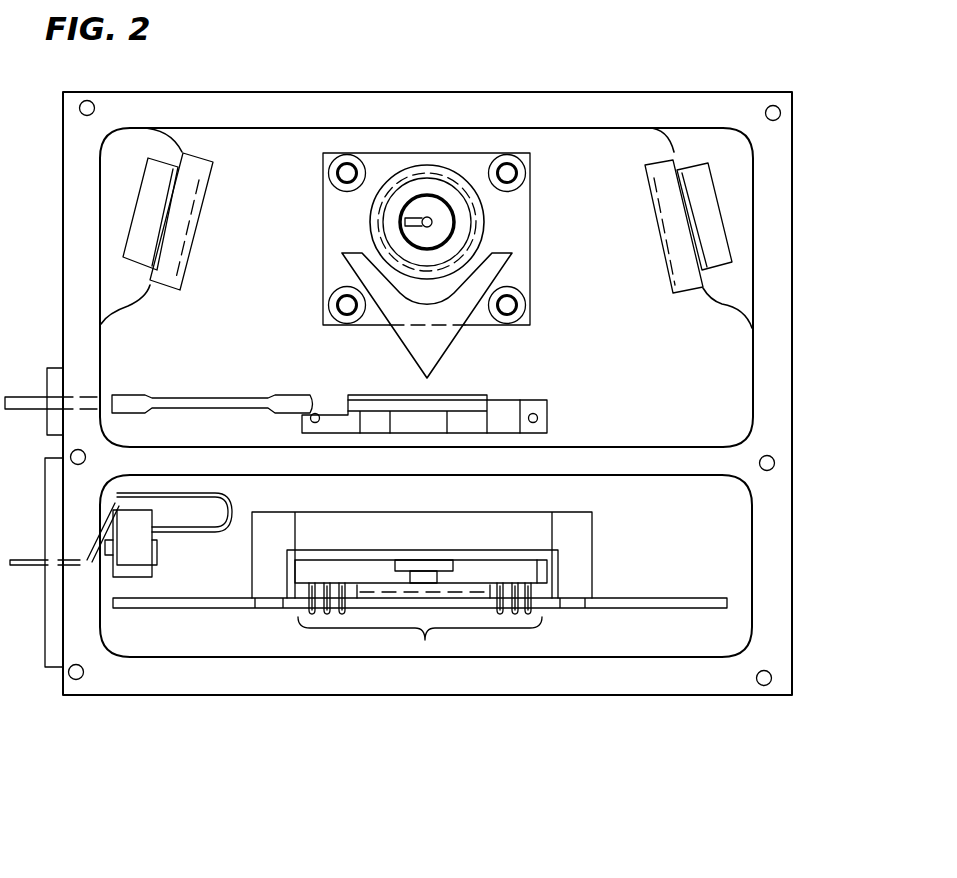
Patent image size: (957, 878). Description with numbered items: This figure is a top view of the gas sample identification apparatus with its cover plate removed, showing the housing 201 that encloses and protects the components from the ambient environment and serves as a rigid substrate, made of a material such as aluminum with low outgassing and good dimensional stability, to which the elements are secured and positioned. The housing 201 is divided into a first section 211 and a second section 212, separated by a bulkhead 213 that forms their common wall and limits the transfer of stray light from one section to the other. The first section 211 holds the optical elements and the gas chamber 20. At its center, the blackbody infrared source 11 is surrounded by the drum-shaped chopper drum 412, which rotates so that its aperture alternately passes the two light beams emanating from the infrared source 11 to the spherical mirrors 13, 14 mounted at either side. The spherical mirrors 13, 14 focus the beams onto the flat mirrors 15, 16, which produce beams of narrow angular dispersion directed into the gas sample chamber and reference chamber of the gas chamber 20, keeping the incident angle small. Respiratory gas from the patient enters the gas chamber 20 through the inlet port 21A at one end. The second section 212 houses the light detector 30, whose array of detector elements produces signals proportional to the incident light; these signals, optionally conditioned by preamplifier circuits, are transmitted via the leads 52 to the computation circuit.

The housing 201 is at (793, 225).
The first section 211 is at (713, 378).
The bulkhead 213 is at (660, 463).
The second section 212 is at (715, 597).
The spherical mirror 14 is at (203, 157).
The spherical mirror 13 is at (652, 158).
The flat mirror 16 is at (400, 350).
The chopper drum 412 is at (408, 168).
The infrared source 11 is at (430, 214).
The flat mirror 15 is at (455, 357).
The inlet port 21A is at (22, 395).
The gas chamber 20 is at (549, 416).
The light detector 30 is at (593, 547).
The leads 52 is at (425, 640).